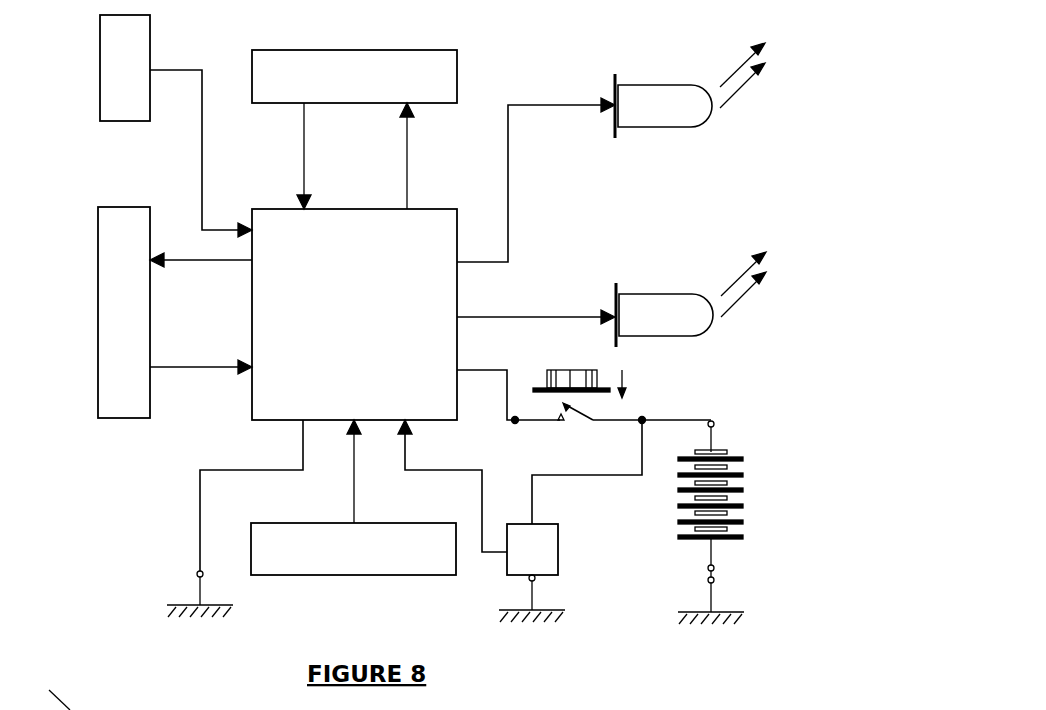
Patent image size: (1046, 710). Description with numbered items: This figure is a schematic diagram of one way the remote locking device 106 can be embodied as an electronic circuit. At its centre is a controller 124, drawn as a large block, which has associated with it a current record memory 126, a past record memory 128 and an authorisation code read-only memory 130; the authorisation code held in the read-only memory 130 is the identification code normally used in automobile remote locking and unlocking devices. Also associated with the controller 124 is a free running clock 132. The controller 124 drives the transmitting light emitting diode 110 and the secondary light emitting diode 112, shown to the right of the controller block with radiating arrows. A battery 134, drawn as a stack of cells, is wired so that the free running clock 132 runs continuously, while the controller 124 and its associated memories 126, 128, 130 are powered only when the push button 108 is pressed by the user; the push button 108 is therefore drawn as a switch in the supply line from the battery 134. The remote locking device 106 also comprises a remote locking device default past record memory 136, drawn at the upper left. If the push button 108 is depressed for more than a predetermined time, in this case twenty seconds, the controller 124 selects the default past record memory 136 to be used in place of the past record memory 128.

The remote locking device 106 is at (609, 655).
The push button 108 is at (592, 373).
The transmitting light emitting diode 110 is at (652, 100).
The secondary light emitting diode 112 is at (650, 310).
The controller 124 is at (267, 399).
The current record memory 126 is at (113, 317).
The past record memory 128 is at (267, 98).
The authorisation code read-only memory 130 is at (282, 553).
The free running clock 132 is at (550, 547).
The battery 134 is at (727, 502).
The remote locking device default past record memory 136 is at (120, 78).